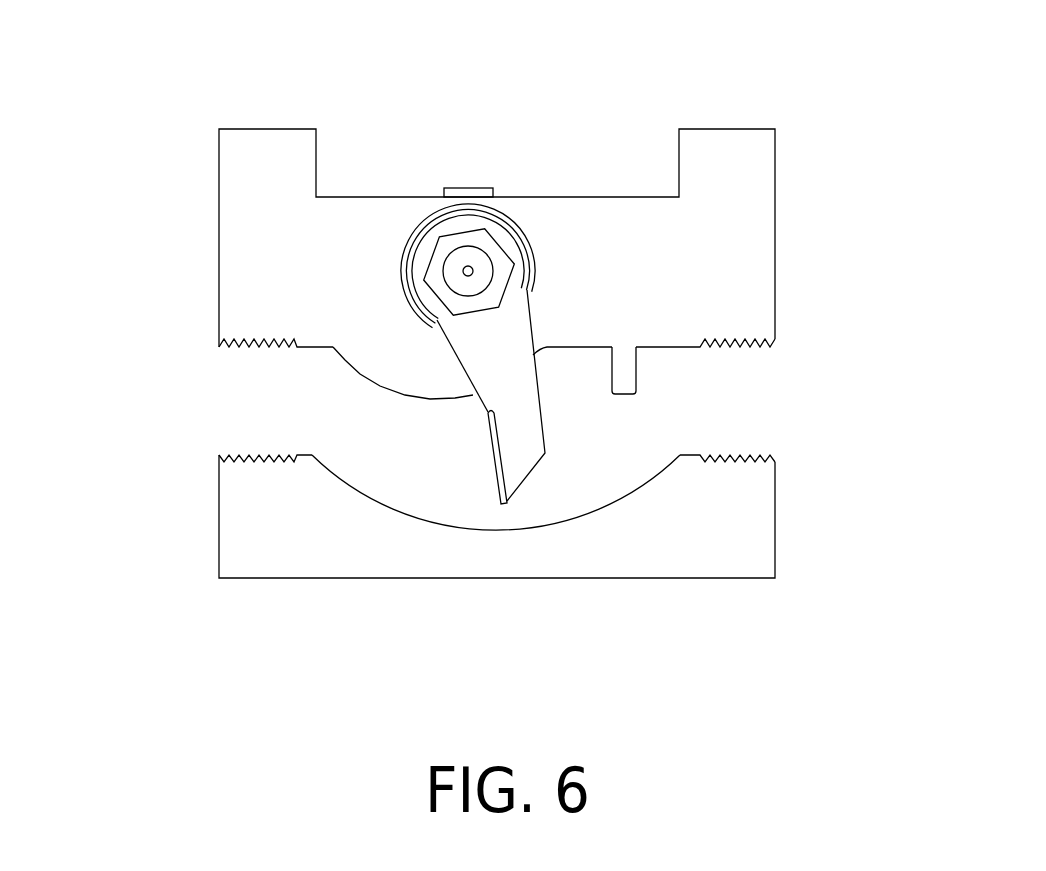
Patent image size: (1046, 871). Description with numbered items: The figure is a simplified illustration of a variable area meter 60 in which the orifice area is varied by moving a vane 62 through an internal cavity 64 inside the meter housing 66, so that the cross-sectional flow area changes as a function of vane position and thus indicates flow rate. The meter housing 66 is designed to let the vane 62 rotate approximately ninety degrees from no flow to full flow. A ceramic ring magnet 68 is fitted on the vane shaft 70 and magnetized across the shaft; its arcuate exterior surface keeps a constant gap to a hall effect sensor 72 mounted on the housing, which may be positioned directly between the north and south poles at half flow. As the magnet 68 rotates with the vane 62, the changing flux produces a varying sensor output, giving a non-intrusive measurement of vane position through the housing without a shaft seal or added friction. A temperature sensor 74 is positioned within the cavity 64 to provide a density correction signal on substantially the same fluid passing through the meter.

The variable area meter 60 is at (479, 348).
The vane 62 is at (485, 453).
The internal cavity 64 is at (597, 450).
The meter housing 66 is at (738, 205).
The ceramic magnet 68 is at (515, 228).
The vane shaft 70 is at (462, 255).
The hall effect sensor 72 is at (470, 184).
The temperature sensor 74 is at (653, 360).